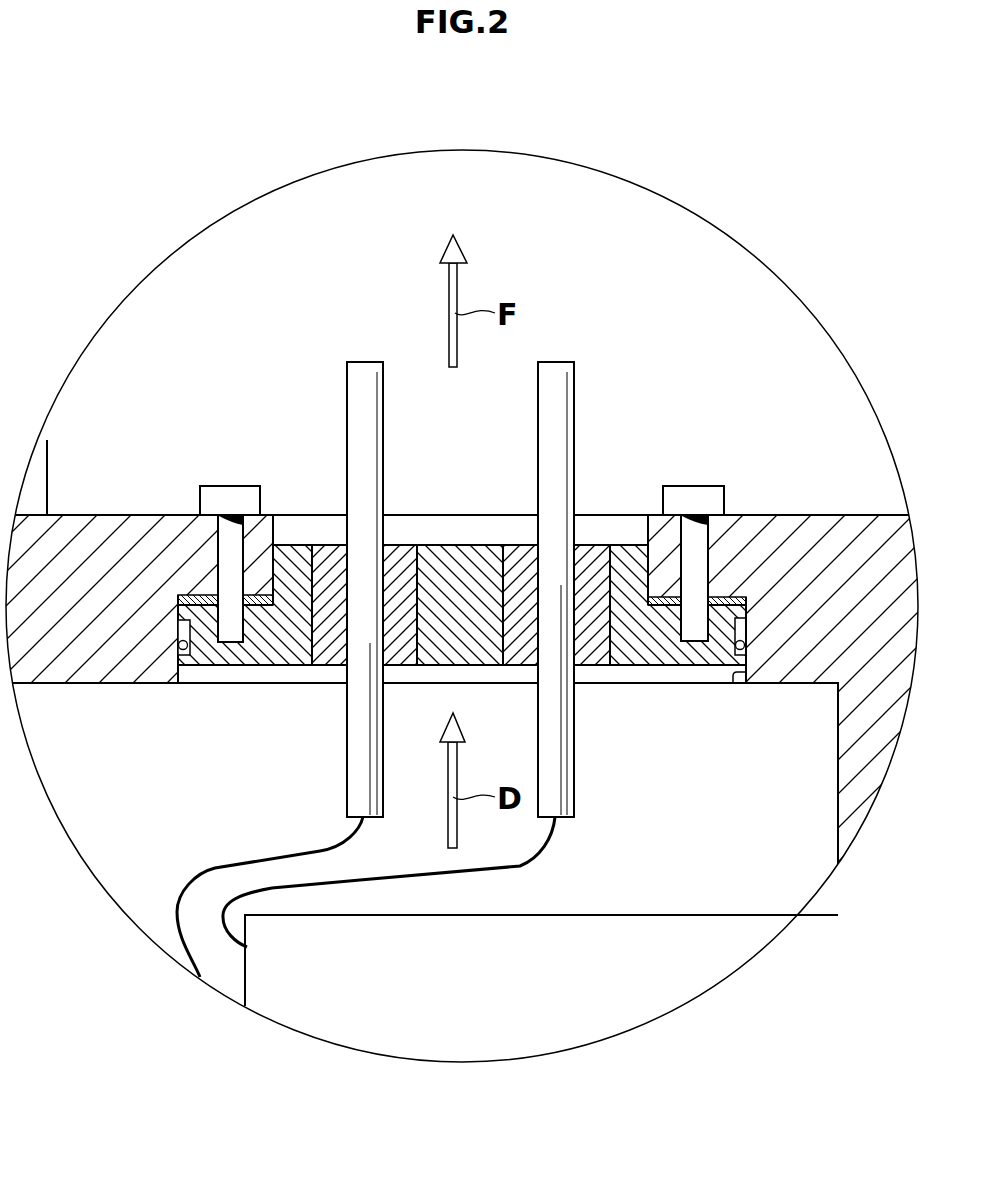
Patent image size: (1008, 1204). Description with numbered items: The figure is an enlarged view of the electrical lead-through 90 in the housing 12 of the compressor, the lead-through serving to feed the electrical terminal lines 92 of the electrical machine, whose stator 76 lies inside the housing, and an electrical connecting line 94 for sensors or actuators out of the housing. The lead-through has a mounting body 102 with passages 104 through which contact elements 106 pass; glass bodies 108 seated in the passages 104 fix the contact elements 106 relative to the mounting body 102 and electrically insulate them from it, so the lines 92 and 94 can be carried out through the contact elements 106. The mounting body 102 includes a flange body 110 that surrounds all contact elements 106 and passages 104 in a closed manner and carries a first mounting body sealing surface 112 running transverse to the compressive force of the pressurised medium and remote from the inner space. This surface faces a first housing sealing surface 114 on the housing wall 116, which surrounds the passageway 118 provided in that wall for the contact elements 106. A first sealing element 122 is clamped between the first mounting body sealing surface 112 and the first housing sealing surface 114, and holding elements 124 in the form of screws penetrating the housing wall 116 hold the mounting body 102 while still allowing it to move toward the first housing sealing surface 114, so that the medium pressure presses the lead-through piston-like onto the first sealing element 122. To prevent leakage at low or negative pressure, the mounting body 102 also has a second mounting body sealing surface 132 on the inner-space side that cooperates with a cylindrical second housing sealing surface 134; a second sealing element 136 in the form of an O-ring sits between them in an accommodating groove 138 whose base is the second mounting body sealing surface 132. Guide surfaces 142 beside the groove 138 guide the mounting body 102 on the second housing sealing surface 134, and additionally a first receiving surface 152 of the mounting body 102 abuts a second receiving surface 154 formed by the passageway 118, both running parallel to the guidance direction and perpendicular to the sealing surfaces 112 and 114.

The housing 12 is at (872, 500).
The stator 76 is at (680, 957).
The electrical lead-through 90 is at (591, 445).
The electrical terminal lines 92 is at (355, 880).
The electrical connecting line 94 is at (192, 881).
The mounting body 102 is at (651, 645).
The passages 104 is at (590, 540).
The contact elements 106 is at (366, 388).
The glass bodies 108 is at (402, 562).
The flange body 110 is at (275, 650).
The first mounting body sealing surface 112 is at (727, 597).
The first housing sealing surface 114 is at (180, 620).
The housing wall 116 is at (114, 540).
The passageway 118 is at (277, 528).
The first sealing element 122 is at (203, 596).
The holding elements 124 is at (228, 562).
The second mounting body sealing surface 132 is at (744, 630).
The second housing sealing surface 134 is at (737, 673).
The second sealing element 136 is at (750, 653).
The accommodating groove 138 is at (178, 632).
The guide surfaces 142 is at (176, 659).
The first receiving surface 152 is at (652, 568).
The second receiving surface 154 is at (285, 574).